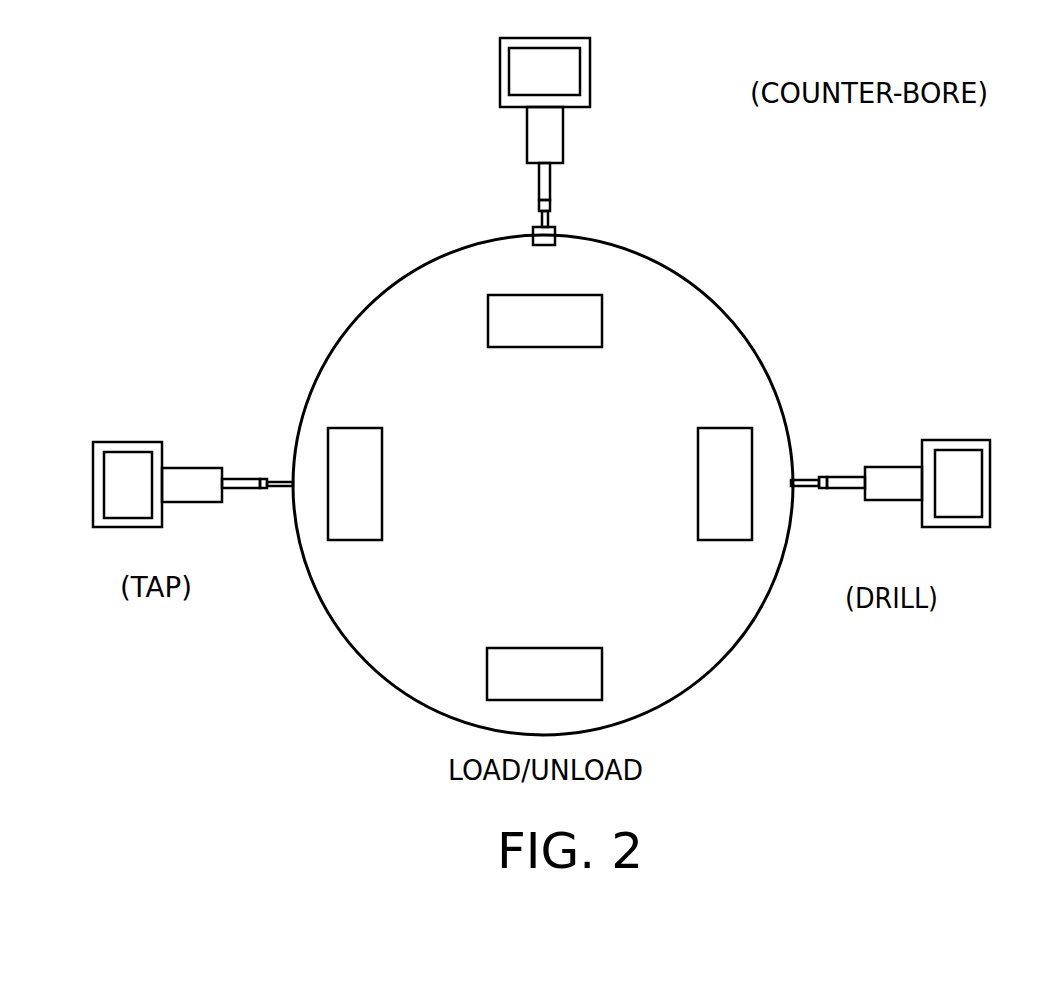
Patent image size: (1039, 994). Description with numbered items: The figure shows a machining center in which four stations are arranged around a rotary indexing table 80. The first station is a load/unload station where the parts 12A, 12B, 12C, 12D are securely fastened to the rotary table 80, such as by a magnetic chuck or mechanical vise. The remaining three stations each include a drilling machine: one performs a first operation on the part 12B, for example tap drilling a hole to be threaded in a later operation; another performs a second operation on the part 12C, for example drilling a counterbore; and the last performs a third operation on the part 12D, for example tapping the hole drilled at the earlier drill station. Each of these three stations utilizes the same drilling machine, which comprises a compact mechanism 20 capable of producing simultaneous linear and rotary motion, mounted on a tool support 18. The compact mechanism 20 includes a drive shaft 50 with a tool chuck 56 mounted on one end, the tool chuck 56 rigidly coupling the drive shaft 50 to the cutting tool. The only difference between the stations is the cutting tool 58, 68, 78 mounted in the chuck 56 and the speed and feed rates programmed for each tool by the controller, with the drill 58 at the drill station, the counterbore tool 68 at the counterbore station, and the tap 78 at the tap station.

The part 12A is at (544, 674).
The part 12B is at (725, 484).
The part 12C is at (545, 321).
The part 12D is at (355, 484).
The tool support 18 is at (560, 73).
The compact mechanism 20 is at (563, 133).
The drive shaft 50 is at (550, 181).
The tool chuck 56 is at (549, 208).
The cutting tool 58 is at (805, 478).
The cutting tool 68 is at (545, 222).
The cutting tool 78 is at (278, 488).
The rotary indexing table 80 is at (705, 287).